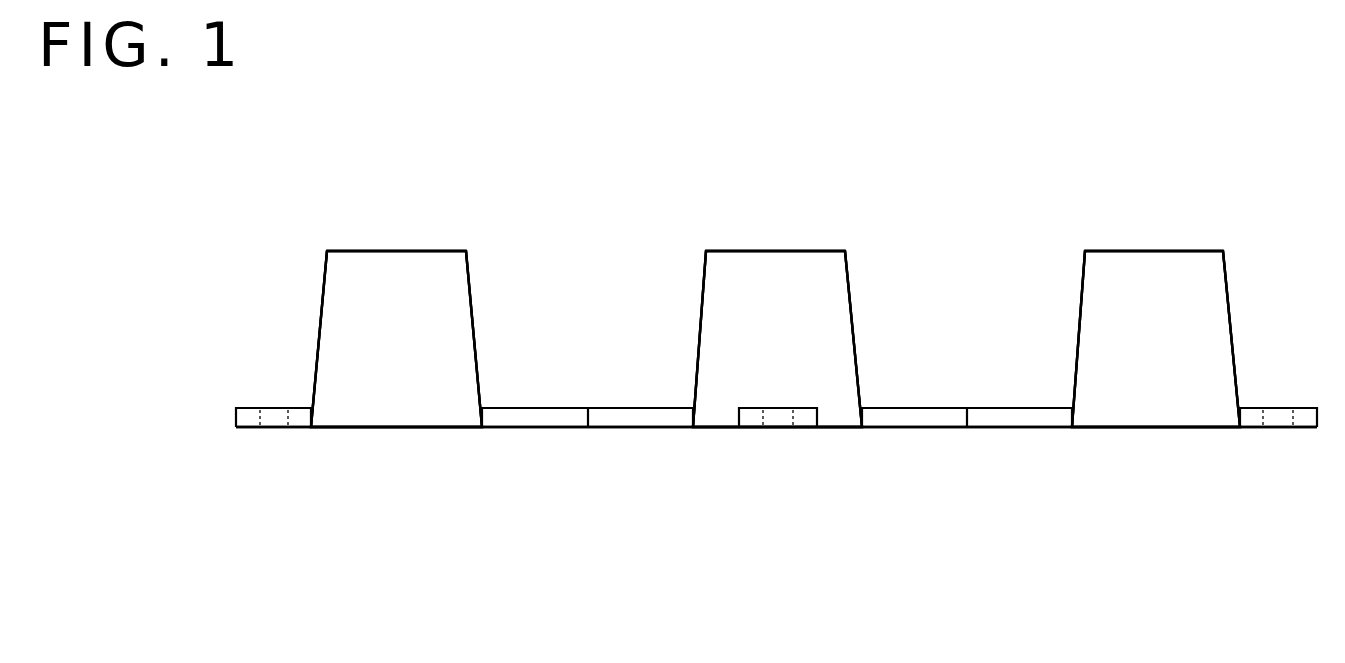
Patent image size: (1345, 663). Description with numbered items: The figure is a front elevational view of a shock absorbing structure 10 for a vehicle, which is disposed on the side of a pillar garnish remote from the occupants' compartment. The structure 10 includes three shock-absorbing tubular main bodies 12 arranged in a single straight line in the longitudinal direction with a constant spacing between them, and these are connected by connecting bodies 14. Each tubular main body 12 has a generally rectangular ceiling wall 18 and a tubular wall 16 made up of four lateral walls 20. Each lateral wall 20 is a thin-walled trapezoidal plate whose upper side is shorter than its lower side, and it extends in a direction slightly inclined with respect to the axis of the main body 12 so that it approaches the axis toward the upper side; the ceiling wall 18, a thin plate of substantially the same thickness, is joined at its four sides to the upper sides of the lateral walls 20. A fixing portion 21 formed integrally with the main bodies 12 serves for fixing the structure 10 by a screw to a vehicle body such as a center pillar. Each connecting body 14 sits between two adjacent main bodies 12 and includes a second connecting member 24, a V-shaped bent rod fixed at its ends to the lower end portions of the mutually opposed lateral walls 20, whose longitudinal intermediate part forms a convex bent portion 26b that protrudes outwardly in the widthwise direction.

The shock absorbing structure 10 is at (716, 206).
The shock-absorbing tubular main body 12 is at (440, 164).
The connecting body 14 is at (643, 435).
The second connecting member 24 is at (776, 510).
The tubular wall 16 is at (450, 275).
The ceiling wall 18 is at (413, 251).
The lateral wall 20 is at (338, 288).
The fixing portion 21 is at (248, 413).
The convex bent portion 26b is at (582, 414).